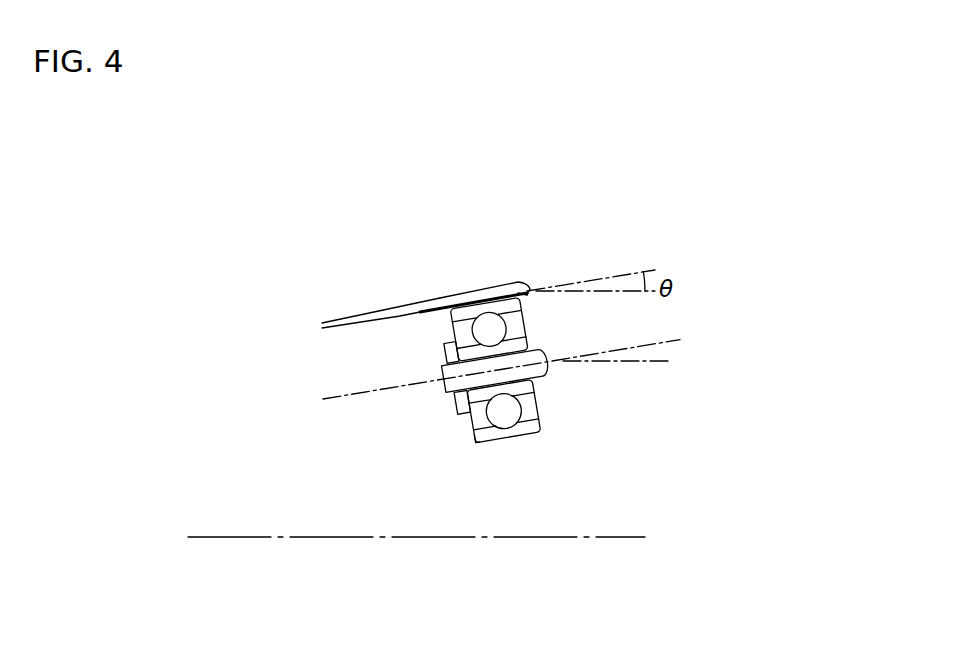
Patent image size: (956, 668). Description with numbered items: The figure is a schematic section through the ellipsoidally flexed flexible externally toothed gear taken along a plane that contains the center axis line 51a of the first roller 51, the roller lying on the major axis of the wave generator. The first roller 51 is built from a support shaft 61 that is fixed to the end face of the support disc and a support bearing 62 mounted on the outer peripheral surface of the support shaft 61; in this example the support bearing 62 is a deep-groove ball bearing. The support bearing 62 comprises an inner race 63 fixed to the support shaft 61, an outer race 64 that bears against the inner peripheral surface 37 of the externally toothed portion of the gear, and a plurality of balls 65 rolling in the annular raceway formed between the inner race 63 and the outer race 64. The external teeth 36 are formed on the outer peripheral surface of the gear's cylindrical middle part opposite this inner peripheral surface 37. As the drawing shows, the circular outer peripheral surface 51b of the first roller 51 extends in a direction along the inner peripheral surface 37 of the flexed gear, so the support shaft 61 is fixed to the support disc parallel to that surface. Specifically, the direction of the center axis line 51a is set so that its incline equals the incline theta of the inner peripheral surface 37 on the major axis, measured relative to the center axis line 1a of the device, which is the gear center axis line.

The center axis line of the device 1a is at (208, 539).
The external teeth 36 is at (485, 272).
The inner peripheral surface of the externally toothed portion 37 is at (536, 309).
The first roller 51 is at (582, 405).
The center axis line of the first roller 51a is at (332, 398).
The circular outer peripheral surface of the first roller 51b is at (463, 306).
The support shaft 61 is at (443, 386).
The support bearing 62 is at (410, 434).
The inner race 63 is at (453, 407).
The outer race 64 is at (472, 442).
The balls 65 is at (468, 423).